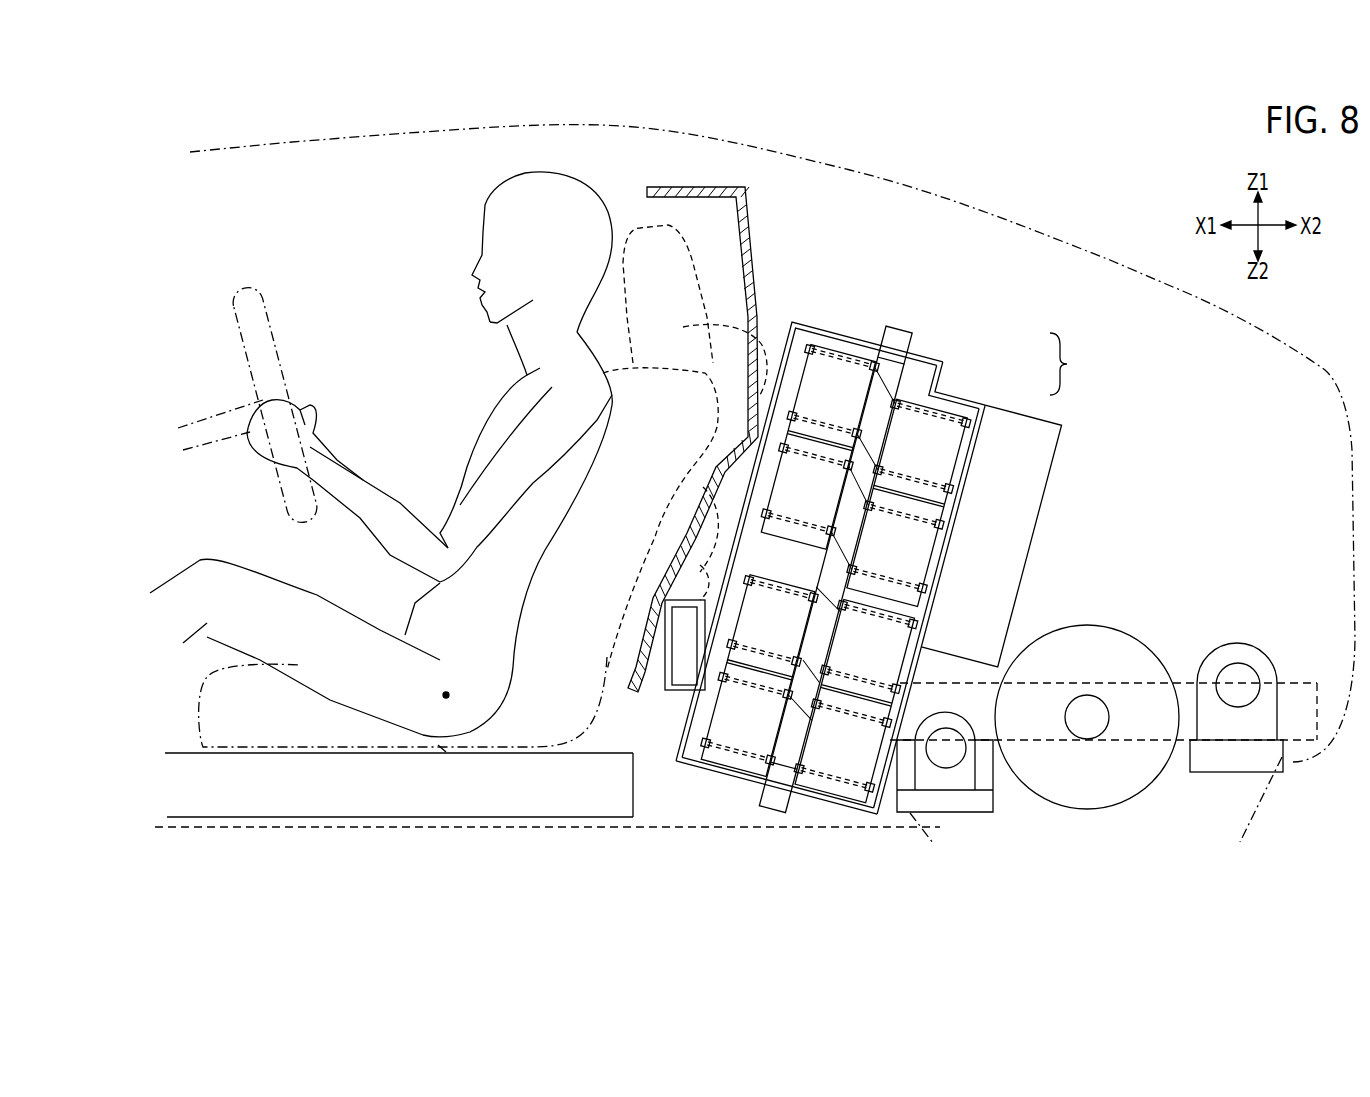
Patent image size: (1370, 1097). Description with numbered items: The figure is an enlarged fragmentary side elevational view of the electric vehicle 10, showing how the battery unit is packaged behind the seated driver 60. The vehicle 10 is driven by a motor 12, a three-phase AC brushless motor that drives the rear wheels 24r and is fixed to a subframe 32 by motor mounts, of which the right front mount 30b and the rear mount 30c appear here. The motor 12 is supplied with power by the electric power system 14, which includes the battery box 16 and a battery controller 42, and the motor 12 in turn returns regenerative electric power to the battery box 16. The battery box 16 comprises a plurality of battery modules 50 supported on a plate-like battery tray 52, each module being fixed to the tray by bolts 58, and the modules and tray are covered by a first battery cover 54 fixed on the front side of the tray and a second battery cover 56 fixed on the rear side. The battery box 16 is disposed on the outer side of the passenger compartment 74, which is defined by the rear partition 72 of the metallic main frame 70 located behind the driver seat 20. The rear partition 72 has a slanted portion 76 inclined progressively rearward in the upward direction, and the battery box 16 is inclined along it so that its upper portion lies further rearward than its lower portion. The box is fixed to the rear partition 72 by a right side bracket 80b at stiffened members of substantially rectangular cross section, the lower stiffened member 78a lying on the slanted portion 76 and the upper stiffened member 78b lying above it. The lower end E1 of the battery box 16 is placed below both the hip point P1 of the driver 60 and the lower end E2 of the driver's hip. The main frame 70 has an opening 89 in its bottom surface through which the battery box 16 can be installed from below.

The electric vehicle 10 is at (1369, 169).
The motor 12 is at (1113, 792).
The electric power system 14 is at (1071, 364).
The battery box 16 is at (953, 377).
The driver seat 20 is at (637, 224).
The rear wheels 24r is at (1257, 827).
The right front mount 30b is at (957, 727).
The rear mount 30c is at (1243, 670).
The subframe 32 is at (965, 800).
The battery controller 42 is at (1007, 423).
The battery modules 50 is at (935, 458).
The battery tray 52 is at (900, 332).
The first battery cover 54 is at (733, 777).
The second battery cover 56 is at (820, 800).
The bolts 58 is at (833, 348).
The driver 60 is at (503, 212).
The main frame 70 is at (534, 820).
The rear partition 72 is at (760, 311).
The passenger compartment 74 is at (336, 275).
The slanted portion 76 is at (718, 533).
The lower stiffened member 78a is at (667, 540).
The upper stiffened member 78b is at (703, 325).
The right side bracket 80b is at (690, 677).
The opening 89 is at (658, 790).
The lower end of the battery box E1 is at (873, 812).
The lower end of the hip E2 is at (443, 752).
The hip point P1 is at (444, 694).